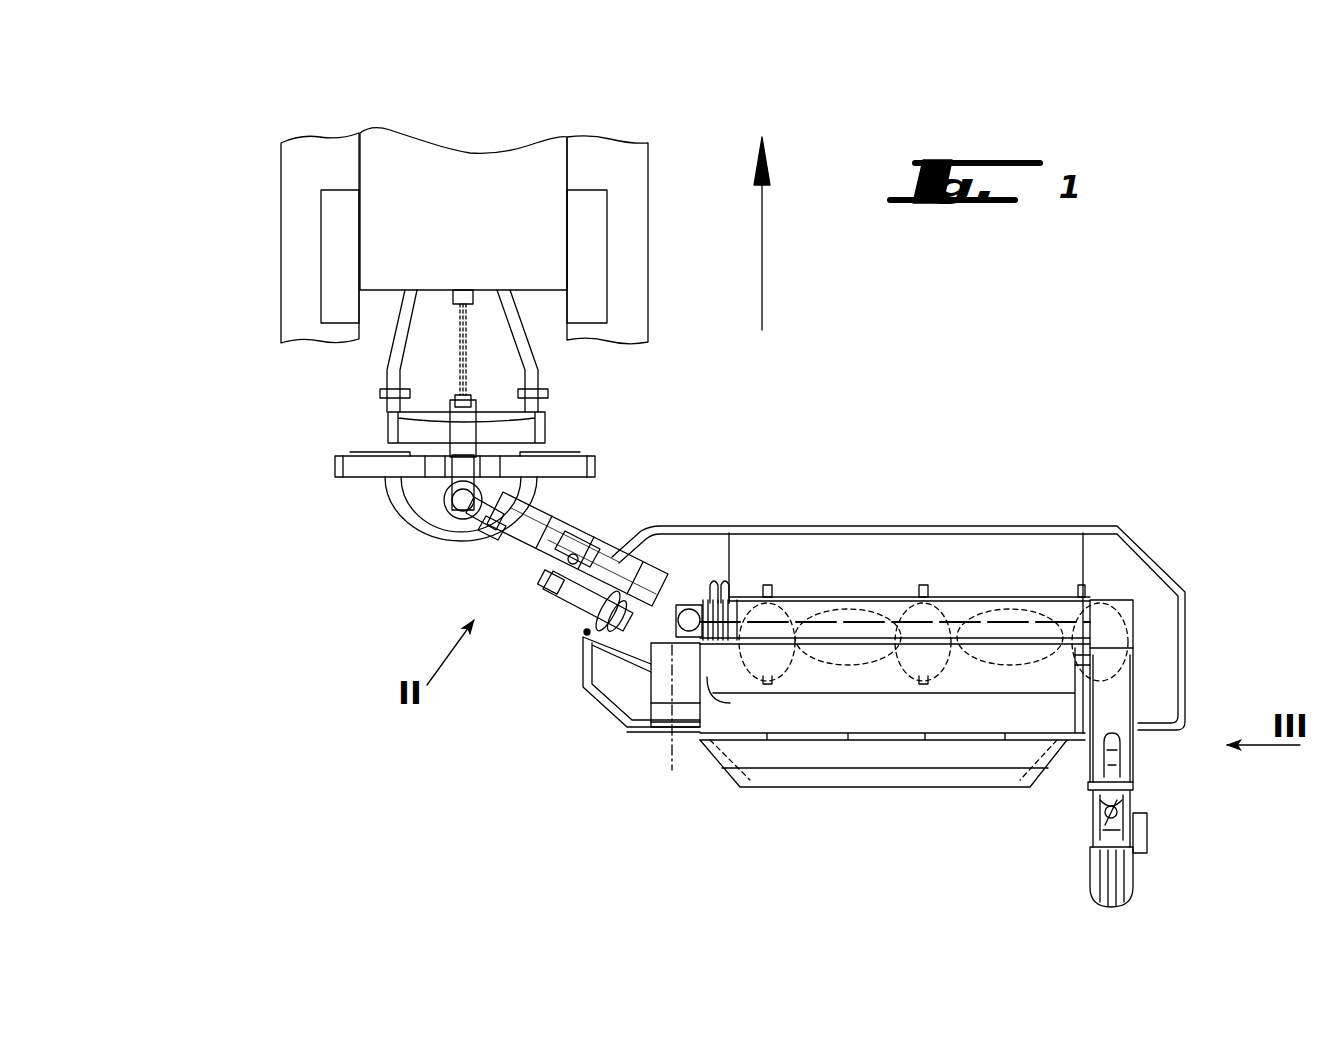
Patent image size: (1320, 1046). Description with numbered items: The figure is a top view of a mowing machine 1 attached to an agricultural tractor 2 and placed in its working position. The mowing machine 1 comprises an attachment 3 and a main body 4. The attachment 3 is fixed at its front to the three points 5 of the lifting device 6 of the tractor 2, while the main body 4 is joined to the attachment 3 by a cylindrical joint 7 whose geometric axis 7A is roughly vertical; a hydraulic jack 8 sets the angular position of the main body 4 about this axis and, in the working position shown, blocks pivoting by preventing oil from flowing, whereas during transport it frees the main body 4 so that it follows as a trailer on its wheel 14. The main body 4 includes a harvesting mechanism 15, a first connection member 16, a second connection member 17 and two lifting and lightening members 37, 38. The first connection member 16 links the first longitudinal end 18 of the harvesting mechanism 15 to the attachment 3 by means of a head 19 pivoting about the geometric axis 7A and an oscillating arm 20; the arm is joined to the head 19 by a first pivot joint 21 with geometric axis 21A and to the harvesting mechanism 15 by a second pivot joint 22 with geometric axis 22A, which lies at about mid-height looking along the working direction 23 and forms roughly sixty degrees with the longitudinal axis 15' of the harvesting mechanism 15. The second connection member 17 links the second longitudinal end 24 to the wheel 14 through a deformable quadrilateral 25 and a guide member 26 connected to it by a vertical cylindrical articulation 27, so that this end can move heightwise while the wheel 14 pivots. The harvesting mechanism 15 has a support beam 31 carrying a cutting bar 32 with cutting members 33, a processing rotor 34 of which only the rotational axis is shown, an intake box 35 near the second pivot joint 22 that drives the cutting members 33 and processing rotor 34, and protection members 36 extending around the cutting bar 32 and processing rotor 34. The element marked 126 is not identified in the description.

The mowing machine 1 is at (916, 386).
The agricultural tractor 2 is at (280, 243).
The attachment 3 is at (550, 423).
The main body 4 is at (1121, 520).
The three points 5 is at (410, 318).
The lifting device 6 is at (395, 350).
The cylindrical joint 7 is at (440, 532).
The geometric axis 7A is at (440, 505).
The hydraulic jack 8 is at (332, 465).
The wheel 14 is at (1135, 880).
The harvesting mechanism 15 is at (883, 807).
The longitudinal axis 15' is at (1165, 570).
The first connection member 16 is at (537, 565).
The second connection member 17 is at (1124, 678).
The first longitudinal end 18 is at (737, 627).
The head 19 is at (436, 498).
The oscillating arm 20 is at (573, 525).
The first pivot joint 21 is at (483, 538).
The geometric axis 21A is at (460, 548).
The second pivot joint 22 is at (683, 565).
The geometric axis 22A is at (637, 690).
The working direction 23 is at (762, 253).
The second longitudinal end 24 is at (1058, 600).
The deformable quadrilateral 25 is at (1087, 757).
The guide member 26 is at (1149, 825).
The cylindrical articulation 27 is at (1090, 843).
The support beam 31 is at (968, 600).
The cutting bar 32 is at (805, 670).
The cutting members 33 is at (677, 728).
The processing rotor 34 is at (968, 696).
The intake box 35 is at (712, 690).
The protection members 36 is at (1018, 540).
The lifting and lightening member 37 is at (585, 636).
The lifting and lightening member 38 is at (1124, 745).
The tractor body 126 is at (454, 162).